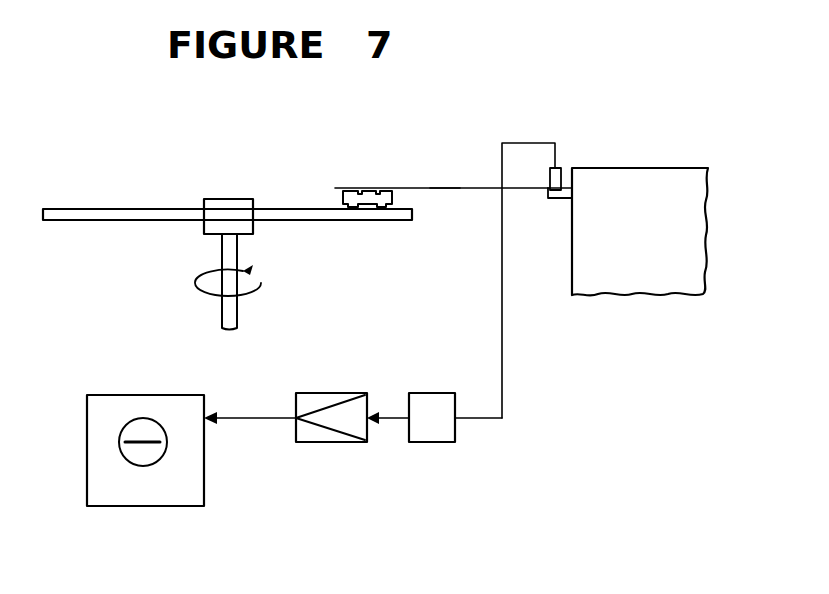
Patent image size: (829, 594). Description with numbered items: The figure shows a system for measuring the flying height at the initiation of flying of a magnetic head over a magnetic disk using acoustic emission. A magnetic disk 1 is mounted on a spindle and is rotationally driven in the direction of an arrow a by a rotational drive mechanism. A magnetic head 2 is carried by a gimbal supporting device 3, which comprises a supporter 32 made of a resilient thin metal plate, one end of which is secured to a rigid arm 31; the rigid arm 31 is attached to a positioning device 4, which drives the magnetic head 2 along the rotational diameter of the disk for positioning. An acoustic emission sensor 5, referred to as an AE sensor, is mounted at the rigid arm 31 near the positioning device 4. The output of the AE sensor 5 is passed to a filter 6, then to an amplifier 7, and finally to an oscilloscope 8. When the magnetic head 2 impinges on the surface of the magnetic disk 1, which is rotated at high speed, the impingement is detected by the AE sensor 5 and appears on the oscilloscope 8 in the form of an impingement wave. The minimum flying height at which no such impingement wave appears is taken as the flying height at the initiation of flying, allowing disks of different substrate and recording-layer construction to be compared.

The magnetic disk 1 is at (120, 207).
The magnetic head 2 is at (395, 206).
The gimbal supporting device 3 is at (421, 186).
The supporter 32 is at (443, 191).
The rigid arm 31 is at (553, 198).
The acoustic emission sensor 5 is at (560, 170).
The positioning device 4 is at (640, 193).
The filter 6 is at (432, 405).
The amplifier 7 is at (314, 402).
The oscilloscope 8 is at (140, 508).
The arrow a is at (261, 284).